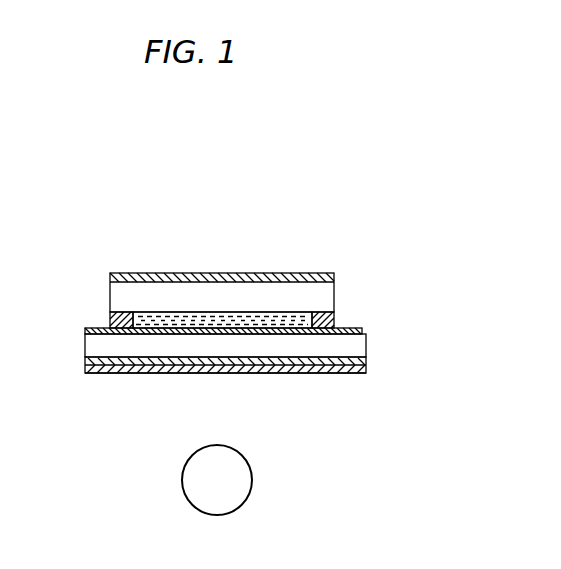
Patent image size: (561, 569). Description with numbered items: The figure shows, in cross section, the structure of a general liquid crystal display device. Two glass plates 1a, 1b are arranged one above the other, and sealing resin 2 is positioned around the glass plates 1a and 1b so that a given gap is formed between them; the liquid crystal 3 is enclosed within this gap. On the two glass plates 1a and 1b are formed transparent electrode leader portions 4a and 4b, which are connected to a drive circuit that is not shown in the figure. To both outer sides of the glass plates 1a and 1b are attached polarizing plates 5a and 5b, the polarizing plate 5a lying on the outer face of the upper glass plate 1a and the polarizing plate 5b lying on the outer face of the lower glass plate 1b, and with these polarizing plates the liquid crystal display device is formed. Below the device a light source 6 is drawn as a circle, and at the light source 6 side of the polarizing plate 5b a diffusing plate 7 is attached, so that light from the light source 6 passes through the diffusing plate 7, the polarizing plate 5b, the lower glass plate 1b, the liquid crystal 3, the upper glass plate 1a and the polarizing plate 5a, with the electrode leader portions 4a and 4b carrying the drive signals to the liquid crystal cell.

The glass plate 1a is at (335, 293).
The glass plate 1b is at (367, 342).
The sealing resin 2 is at (108, 317).
The liquid crystal 3 is at (163, 315).
The transparent electrode leader portion 4a is at (355, 328).
The transparent electrode leader portion 4b is at (87, 329).
The polarizing plate 5a is at (243, 273).
The polarizing plate 5b is at (368, 362).
The light source 6 is at (185, 492).
The diffusing plate 7 is at (367, 371).